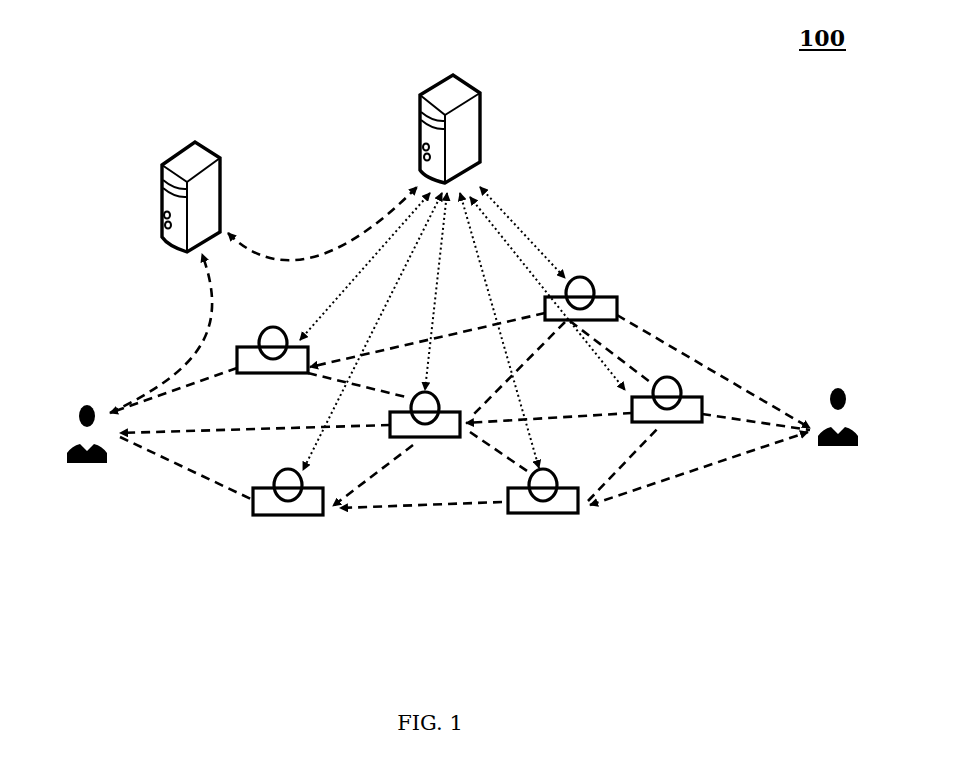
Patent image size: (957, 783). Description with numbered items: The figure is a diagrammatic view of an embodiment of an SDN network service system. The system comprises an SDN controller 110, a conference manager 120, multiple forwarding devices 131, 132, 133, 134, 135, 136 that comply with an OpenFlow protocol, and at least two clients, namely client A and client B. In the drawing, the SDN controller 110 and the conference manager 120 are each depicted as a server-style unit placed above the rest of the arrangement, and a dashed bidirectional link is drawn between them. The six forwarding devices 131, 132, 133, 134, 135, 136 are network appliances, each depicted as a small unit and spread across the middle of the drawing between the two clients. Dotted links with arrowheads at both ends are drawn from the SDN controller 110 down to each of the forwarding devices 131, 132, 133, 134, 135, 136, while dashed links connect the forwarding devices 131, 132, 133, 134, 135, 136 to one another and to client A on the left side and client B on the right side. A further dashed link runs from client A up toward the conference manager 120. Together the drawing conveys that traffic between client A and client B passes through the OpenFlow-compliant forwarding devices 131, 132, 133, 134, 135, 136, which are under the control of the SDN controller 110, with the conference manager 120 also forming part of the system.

The SDN controller 110 is at (488, 120).
The conference manager 120 is at (228, 168).
The forwarding device 131 is at (268, 333).
The forwarding device 132 is at (293, 520).
The forwarding device 133 is at (430, 440).
The forwarding device 134 is at (615, 295).
The forwarding device 135 is at (560, 483).
The forwarding device 136 is at (702, 398).
The client A is at (78, 398).
The client B is at (853, 413).